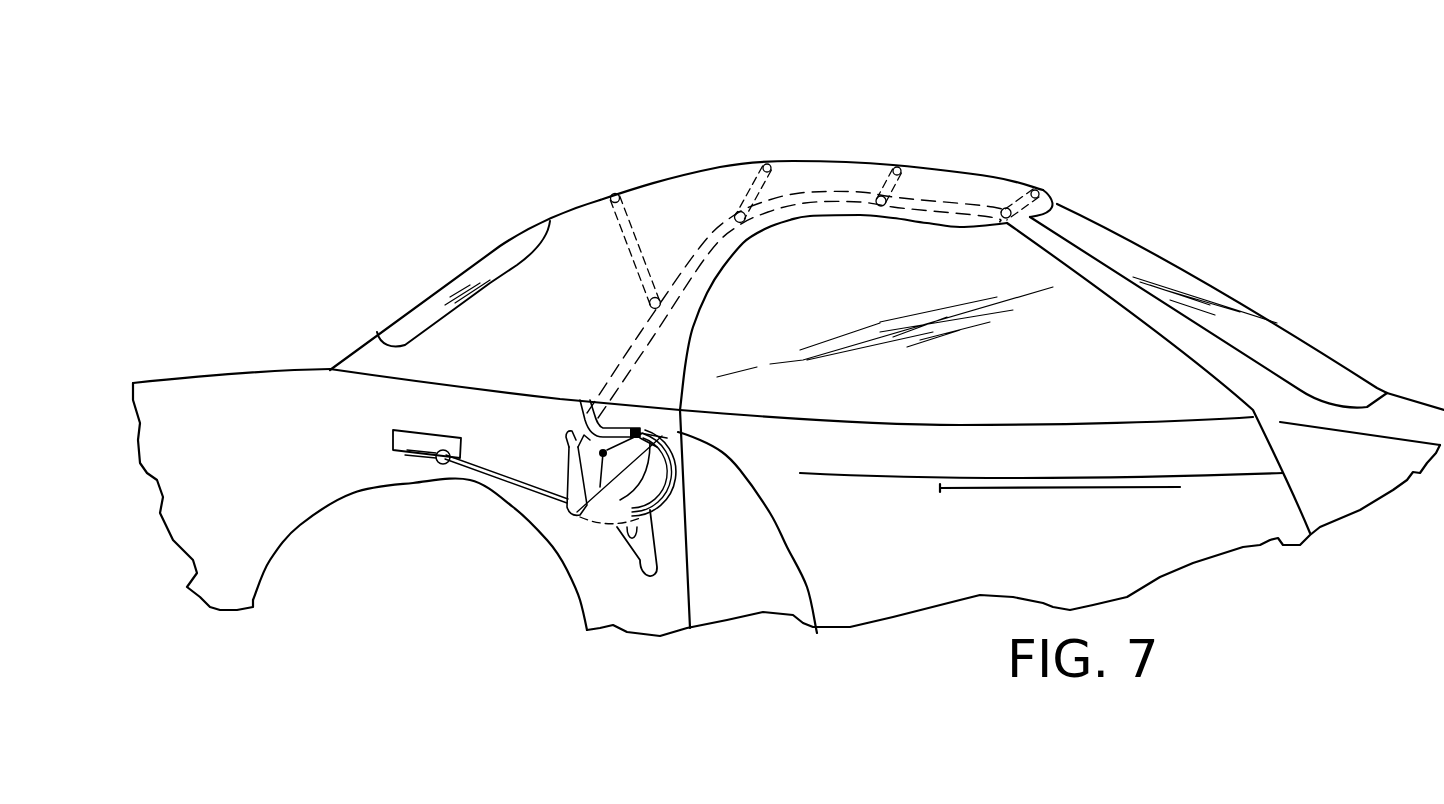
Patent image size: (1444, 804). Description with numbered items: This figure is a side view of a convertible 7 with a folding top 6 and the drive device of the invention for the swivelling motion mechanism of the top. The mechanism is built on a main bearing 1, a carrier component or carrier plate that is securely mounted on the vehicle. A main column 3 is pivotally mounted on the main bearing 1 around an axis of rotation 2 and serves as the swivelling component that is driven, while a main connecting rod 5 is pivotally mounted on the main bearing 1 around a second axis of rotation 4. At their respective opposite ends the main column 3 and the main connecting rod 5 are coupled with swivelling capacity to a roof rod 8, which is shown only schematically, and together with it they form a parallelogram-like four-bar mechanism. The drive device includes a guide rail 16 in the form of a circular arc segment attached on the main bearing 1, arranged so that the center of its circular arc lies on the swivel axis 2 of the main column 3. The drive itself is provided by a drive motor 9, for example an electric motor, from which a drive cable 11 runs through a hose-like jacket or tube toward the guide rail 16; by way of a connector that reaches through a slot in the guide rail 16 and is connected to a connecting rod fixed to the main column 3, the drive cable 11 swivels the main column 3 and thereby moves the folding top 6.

The main bearing 1 is at (636, 580).
The axis of rotation 2 is at (577, 517).
The main column 3 is at (582, 440).
The axis of rotation 4 is at (817, 633).
The main connecting rod 5 is at (580, 400).
The folding top 6 is at (840, 152).
The convertible 7 is at (1353, 314).
The roof rod 8 is at (688, 258).
The drive motor 9 is at (410, 438).
The drive cable 11 is at (450, 494).
The guide rail 16 is at (672, 516).